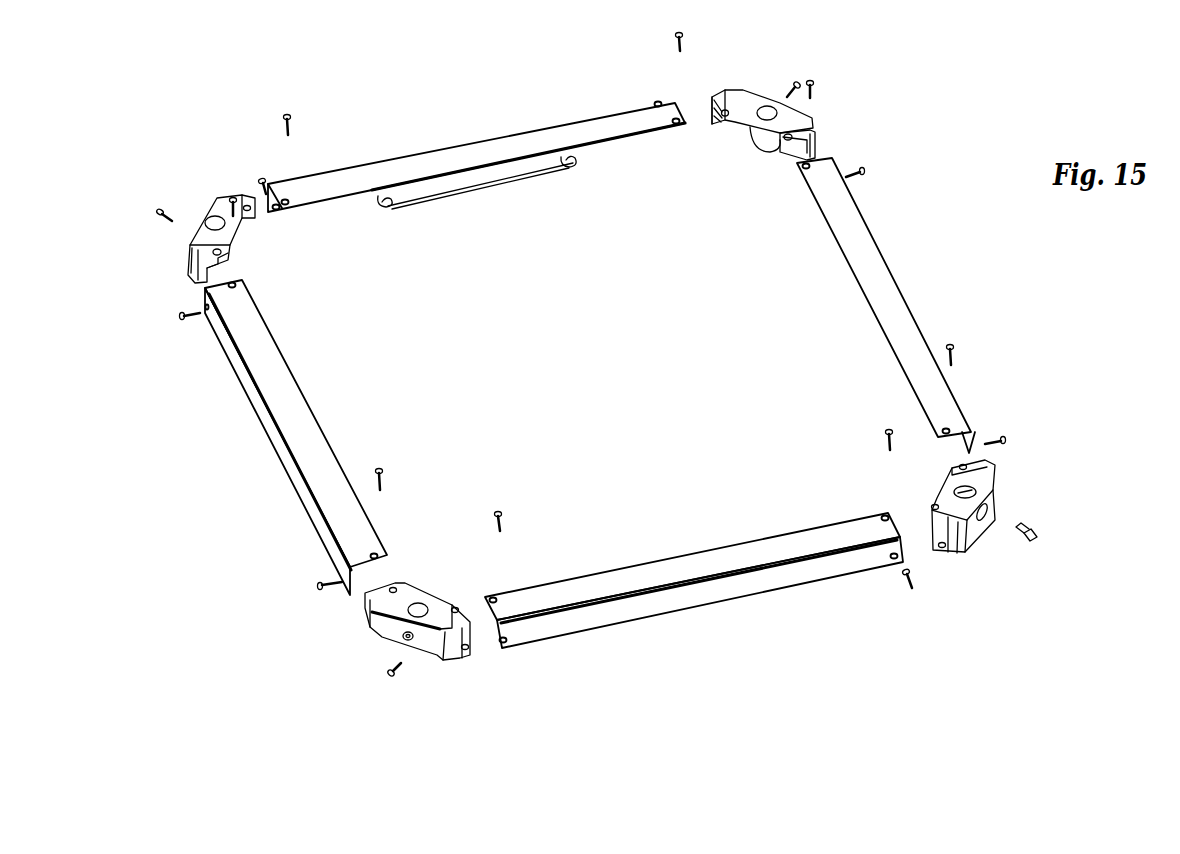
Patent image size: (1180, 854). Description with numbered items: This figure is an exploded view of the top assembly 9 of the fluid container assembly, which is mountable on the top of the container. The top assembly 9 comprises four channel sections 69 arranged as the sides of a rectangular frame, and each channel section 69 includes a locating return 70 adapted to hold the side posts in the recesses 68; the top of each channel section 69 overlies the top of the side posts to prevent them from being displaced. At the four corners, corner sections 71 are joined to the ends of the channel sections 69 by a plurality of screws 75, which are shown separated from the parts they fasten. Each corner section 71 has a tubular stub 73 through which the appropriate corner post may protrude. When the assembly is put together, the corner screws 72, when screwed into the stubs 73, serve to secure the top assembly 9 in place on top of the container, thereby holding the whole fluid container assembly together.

The top assembly 9 is at (649, 663).
The recess 68 is at (383, 197).
The channel section 69 is at (500, 143).
The locating return 70 is at (466, 178).
The corner section 71 is at (213, 207).
The corner screw 72 is at (1028, 541).
The tubular stub 73 is at (835, 157).
The screw 75 is at (295, 127).